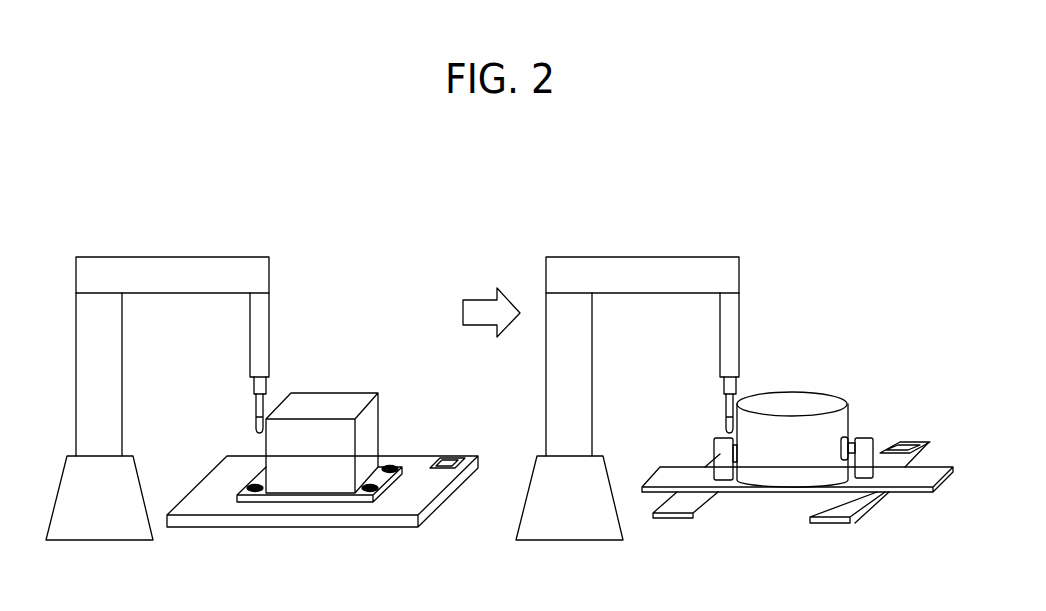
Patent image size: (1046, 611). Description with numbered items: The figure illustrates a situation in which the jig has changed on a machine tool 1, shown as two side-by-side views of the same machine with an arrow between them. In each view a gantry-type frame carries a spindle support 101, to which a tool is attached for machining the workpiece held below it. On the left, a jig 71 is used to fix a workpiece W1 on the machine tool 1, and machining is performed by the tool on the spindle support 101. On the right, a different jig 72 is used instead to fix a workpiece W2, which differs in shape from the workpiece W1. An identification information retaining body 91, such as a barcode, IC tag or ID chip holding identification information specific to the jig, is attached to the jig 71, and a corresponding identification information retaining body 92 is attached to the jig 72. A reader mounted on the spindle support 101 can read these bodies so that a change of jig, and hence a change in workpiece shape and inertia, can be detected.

The machine tool 1 is at (240, 178).
The spindle support 101 is at (130, 257).
The jig 71 is at (395, 528).
The jig 72 is at (878, 505).
The workpiece W1 is at (384, 412).
The workpiece W2 is at (835, 394).
The identification information retaining body 91 is at (445, 462).
The identification information retaining body 92 is at (899, 444).